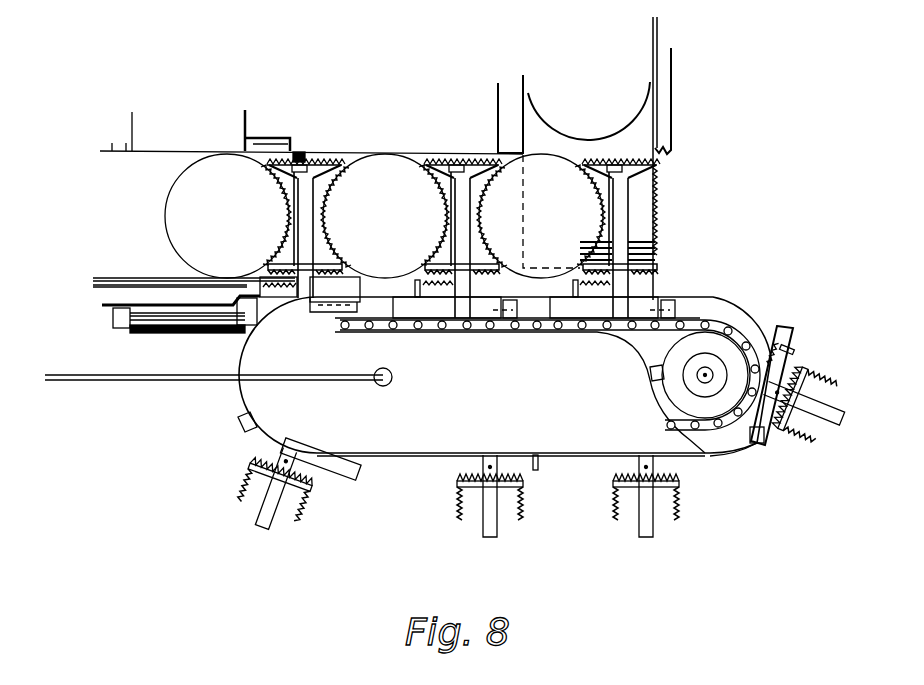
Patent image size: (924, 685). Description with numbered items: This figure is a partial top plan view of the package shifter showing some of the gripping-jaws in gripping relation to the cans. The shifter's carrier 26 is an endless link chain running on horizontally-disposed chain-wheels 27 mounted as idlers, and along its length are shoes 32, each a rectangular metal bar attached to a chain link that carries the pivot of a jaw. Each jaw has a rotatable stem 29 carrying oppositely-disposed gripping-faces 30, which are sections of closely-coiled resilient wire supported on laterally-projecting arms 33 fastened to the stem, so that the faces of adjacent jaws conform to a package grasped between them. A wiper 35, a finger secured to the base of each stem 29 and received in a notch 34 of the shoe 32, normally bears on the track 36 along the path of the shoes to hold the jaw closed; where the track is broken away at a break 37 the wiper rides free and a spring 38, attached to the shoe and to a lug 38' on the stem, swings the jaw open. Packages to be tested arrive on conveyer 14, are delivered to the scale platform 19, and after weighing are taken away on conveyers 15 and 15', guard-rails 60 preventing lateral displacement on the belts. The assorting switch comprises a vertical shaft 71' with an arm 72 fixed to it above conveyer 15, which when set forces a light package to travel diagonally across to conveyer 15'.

The conveyer 15 is at (311, 138).
The conveyer 15' is at (247, 120).
The guard-rail 60 is at (667, 92).
The gripping-face 30 is at (323, 203).
The platform 19 is at (434, 157).
The arm 33 is at (305, 160).
The conveyer 14 is at (643, 188).
The stem 29 is at (655, 245).
The wiper 35 is at (325, 307).
The break 37 is at (370, 305).
The shoe 32 is at (258, 300).
The spring 38 is at (544, 324).
The lug 38' is at (618, 376).
The carrier 26 is at (453, 330).
The chain-wheel 27 is at (705, 375).
The notch 34 is at (760, 432).
The track 36 is at (733, 445).
The arm 72 is at (183, 378).
The shaft 71' is at (381, 392).